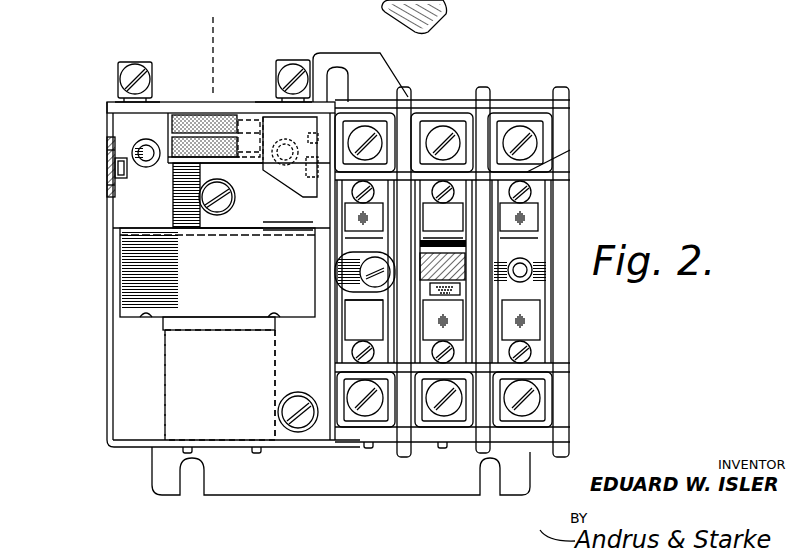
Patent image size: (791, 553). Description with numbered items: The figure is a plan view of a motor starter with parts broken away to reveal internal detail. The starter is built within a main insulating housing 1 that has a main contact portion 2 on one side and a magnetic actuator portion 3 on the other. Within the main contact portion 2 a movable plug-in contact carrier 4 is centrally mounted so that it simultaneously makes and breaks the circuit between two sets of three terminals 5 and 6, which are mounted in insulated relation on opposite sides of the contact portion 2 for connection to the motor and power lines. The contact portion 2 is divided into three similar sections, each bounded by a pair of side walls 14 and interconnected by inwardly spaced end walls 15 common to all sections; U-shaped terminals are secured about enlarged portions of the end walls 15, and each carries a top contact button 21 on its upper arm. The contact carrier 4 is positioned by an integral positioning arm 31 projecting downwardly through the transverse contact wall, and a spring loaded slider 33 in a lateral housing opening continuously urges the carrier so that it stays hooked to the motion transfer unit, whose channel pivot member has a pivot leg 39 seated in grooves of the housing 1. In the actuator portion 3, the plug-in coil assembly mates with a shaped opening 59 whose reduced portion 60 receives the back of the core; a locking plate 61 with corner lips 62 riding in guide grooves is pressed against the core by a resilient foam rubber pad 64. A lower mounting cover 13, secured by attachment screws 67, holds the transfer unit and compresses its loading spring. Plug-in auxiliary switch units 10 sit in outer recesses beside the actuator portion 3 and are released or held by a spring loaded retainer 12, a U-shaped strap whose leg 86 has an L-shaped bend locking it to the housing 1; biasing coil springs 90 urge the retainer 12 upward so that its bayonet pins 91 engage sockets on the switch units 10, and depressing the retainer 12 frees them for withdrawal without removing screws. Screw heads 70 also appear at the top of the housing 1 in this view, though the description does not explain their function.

The main insulating housing 1 is at (103, 323).
The main contact portion 2 is at (490, 85).
The magnetic actuator portion 3 is at (223, 90).
The contact carrier 4 is at (403, 55).
The terminals 5 is at (168, 25).
The terminals 6 is at (325, 27).
The auxiliary switch units 10 is at (115, 101).
The spring loaded retainer 12 is at (107, 187).
The lower mounting cover 13 is at (322, 488).
The side walls 14 is at (490, 217).
The end walls 15 is at (527, 172).
The top contact button 21 is at (532, 216).
The positioning arm 31 is at (465, 280).
The spring loaded slider 33 is at (430, 290).
The pivot leg 39 is at (172, 380).
The opening 59 is at (135, 273).
The reduced portion 60 is at (192, 220).
The locking plate 61 is at (233, 162).
The lips 62 is at (165, 172).
The resilient foam rubber pad 64 is at (190, 123).
The attachment screws 67 is at (236, 205).
The fastening screw 70 is at (128, 62).
The leg 86 is at (112, 167).
The biasing coil springs 90 is at (153, 140).
The bayonet pins 91 is at (110, 158).